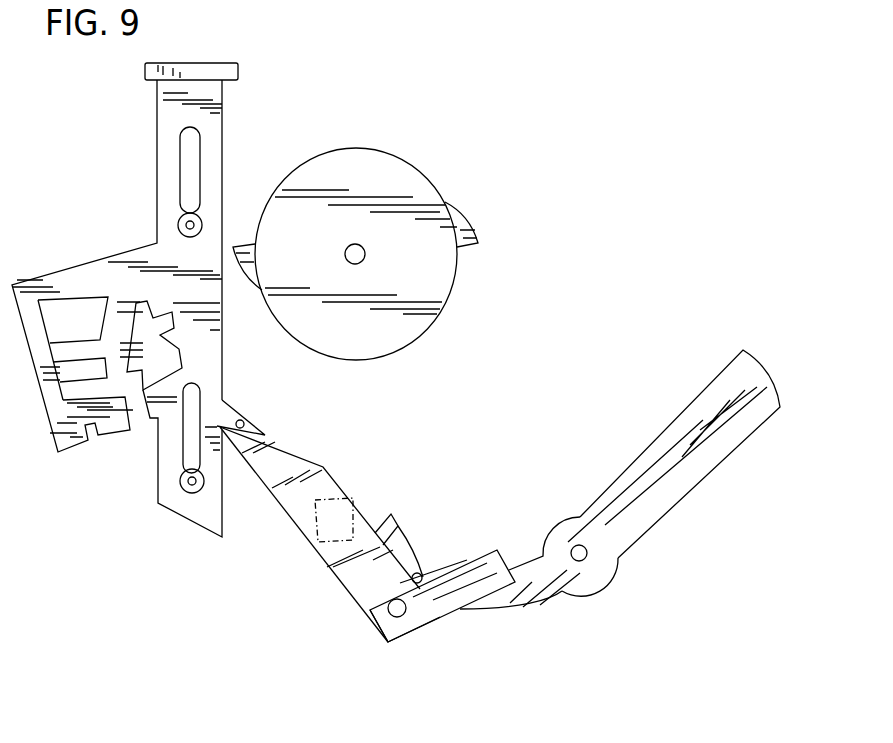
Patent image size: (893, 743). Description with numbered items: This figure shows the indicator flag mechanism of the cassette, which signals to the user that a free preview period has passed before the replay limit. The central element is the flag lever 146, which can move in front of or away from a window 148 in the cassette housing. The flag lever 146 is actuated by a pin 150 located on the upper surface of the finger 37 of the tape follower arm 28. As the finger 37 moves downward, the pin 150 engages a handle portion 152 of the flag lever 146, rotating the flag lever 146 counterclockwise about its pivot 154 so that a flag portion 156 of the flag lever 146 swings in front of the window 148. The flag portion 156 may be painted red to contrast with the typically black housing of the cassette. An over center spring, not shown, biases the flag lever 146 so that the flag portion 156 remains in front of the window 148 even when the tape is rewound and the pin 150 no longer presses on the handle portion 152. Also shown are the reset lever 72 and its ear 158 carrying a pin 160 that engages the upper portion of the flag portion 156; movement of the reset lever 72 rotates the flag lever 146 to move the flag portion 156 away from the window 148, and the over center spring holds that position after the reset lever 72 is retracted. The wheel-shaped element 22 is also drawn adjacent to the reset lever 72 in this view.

The reset lever 72 is at (212, 101).
The cam wheel 22 is at (415, 163).
The ear 158 is at (233, 405).
The pin 160 is at (246, 421).
The flag portion 156 is at (282, 497).
The window 148 is at (335, 497).
The pin 150 is at (425, 573).
The flag lever 146 is at (360, 580).
The pivot 154 is at (387, 615).
The handle portion 152 is at (422, 617).
The tape follower arm 28 is at (643, 470).
The finger 37 is at (500, 603).